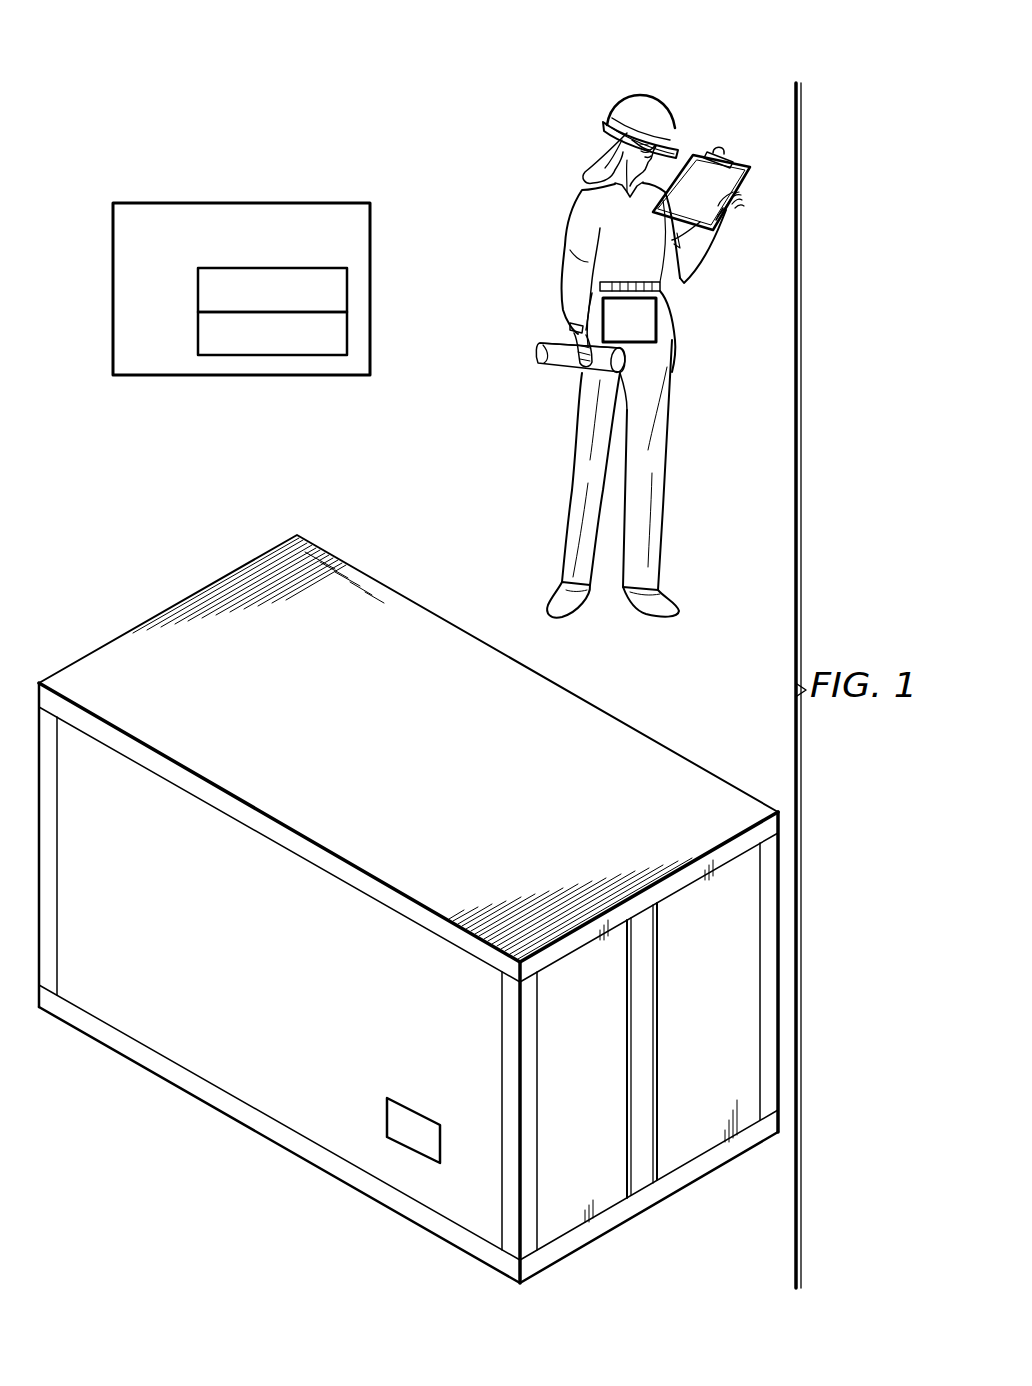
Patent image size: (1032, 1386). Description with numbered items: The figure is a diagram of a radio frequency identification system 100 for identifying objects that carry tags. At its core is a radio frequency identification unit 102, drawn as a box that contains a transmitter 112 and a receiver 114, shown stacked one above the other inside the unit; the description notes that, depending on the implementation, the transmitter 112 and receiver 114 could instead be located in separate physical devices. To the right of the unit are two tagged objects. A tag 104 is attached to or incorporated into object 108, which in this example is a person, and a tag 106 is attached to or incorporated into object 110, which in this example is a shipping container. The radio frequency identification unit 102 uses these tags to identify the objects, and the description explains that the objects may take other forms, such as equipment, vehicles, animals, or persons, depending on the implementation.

The radio frequency identification system 100 is at (394, 70).
The radio frequency identification unit 102 is at (215, 194).
The tag 104 is at (656, 320).
The tag 106 is at (413, 1110).
The object 108 is at (660, 84).
The object 110 is at (275, 1155).
The transmitter 112 is at (198, 290).
The receiver 114 is at (198, 332).